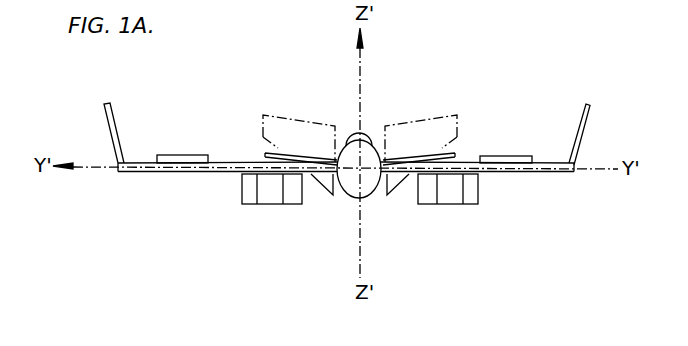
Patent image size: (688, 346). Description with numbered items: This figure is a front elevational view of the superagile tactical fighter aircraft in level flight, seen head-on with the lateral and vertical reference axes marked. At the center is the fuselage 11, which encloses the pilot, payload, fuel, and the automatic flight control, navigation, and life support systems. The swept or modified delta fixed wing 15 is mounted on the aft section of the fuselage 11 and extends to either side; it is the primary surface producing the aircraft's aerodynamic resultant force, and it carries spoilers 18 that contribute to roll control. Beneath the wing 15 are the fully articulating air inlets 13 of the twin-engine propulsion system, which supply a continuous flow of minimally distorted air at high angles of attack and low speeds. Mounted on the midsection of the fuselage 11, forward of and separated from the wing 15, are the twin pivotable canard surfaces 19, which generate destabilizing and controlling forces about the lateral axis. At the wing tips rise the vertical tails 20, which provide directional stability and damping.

The fuselage 11 is at (375, 199).
The air inlets 13 is at (272, 204).
The fixed wing 15 is at (183, 173).
The spoilers 18 is at (178, 155).
The canard surfaces 19 is at (301, 117).
The vertical tails 20 is at (118, 128).